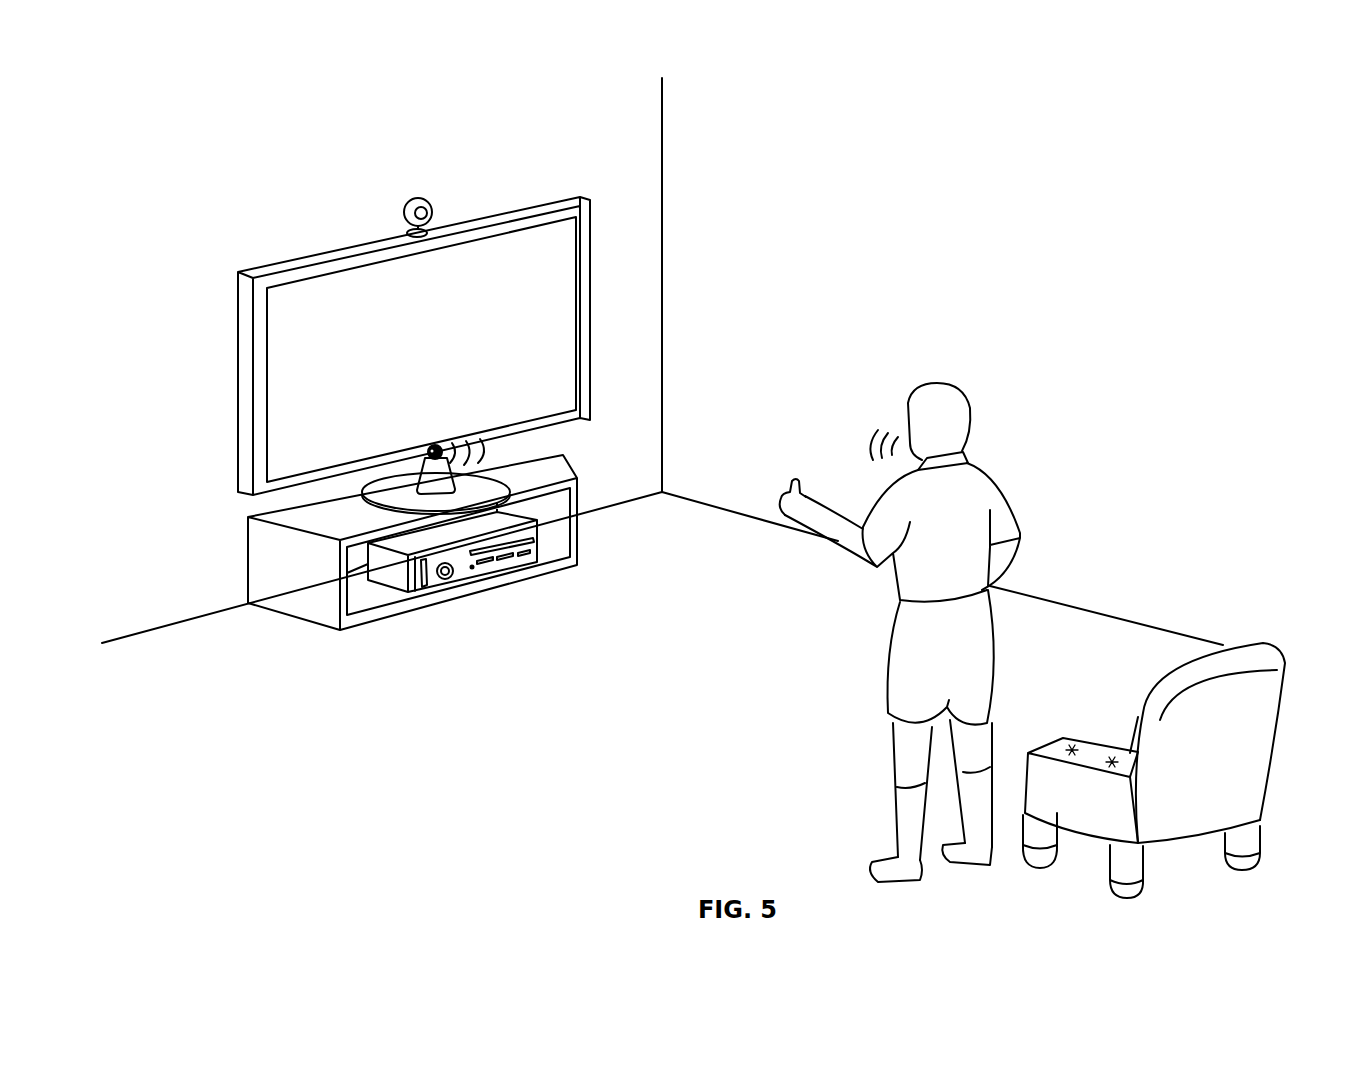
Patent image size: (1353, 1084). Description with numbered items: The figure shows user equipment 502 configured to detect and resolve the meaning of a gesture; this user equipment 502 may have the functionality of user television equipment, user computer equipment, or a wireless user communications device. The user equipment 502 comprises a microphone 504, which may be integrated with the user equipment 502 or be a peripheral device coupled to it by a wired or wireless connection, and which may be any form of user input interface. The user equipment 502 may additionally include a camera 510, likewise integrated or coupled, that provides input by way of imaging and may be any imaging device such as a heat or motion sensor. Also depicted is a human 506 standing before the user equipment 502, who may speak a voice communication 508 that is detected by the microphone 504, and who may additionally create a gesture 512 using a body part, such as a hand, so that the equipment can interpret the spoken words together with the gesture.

The user equipment 502 is at (540, 200).
The microphone 504 is at (426, 447).
The human 506 is at (886, 617).
The voice communication 508 is at (855, 438).
The camera 510 is at (411, 199).
The gesture 512 is at (790, 482).